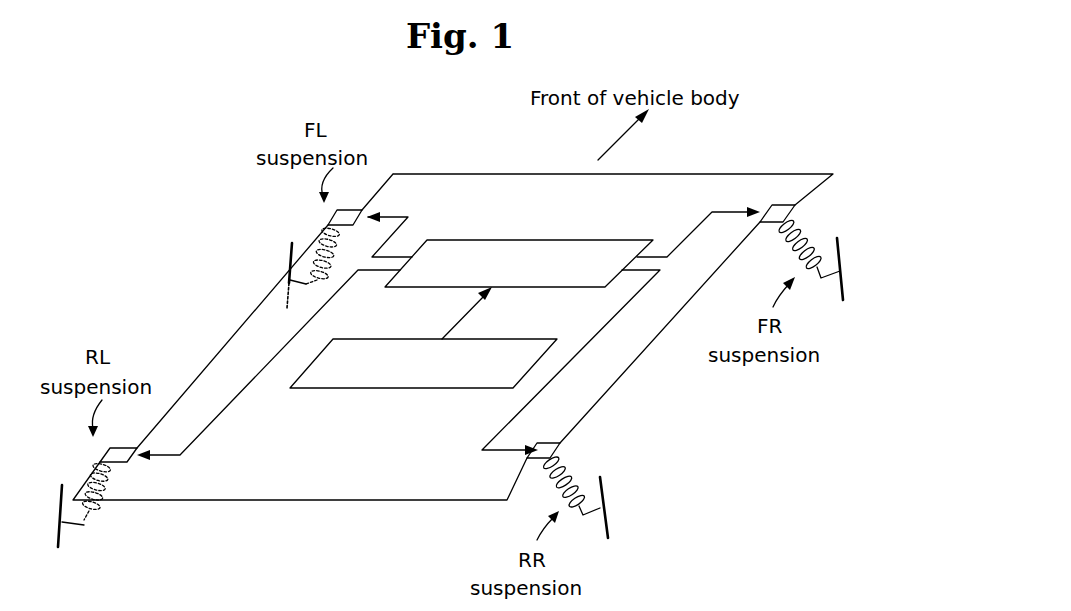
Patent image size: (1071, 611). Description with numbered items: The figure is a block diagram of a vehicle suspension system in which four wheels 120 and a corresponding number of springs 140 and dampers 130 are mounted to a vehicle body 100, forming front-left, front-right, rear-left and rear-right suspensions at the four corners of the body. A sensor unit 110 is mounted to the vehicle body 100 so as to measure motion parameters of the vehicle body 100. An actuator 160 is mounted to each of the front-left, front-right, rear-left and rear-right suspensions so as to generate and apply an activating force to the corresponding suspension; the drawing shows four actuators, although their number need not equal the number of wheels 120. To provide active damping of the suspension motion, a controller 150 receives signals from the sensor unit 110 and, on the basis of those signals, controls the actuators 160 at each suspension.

The vehicle body 100 is at (723, 180).
The sensor unit 110 is at (520, 347).
The wheel 120 is at (288, 266).
The damper 130 is at (290, 288).
The spring 140 is at (330, 234).
The controller 150 is at (542, 240).
The actuator 160 is at (353, 207).